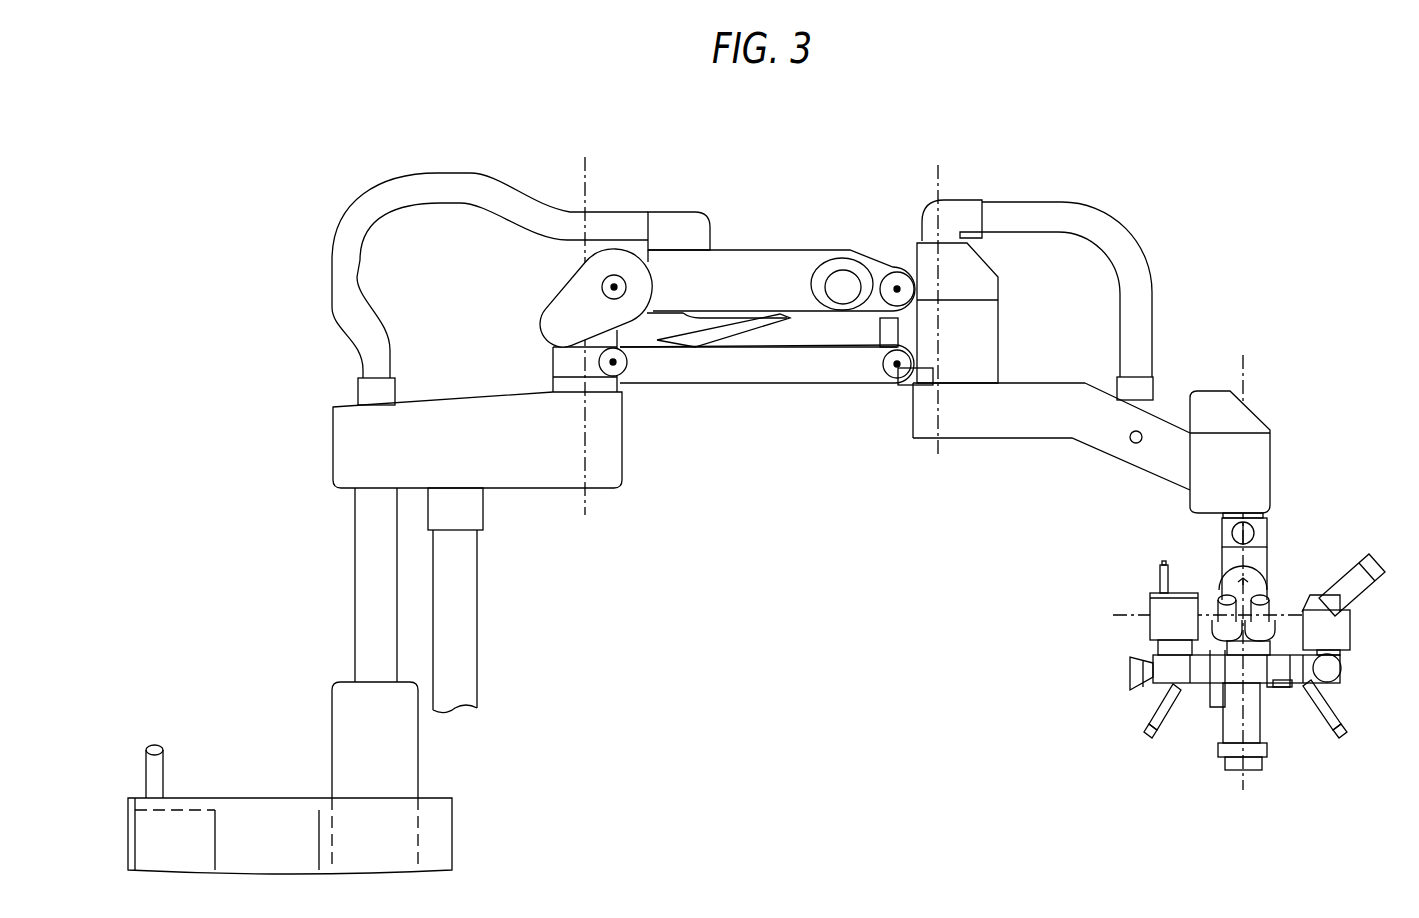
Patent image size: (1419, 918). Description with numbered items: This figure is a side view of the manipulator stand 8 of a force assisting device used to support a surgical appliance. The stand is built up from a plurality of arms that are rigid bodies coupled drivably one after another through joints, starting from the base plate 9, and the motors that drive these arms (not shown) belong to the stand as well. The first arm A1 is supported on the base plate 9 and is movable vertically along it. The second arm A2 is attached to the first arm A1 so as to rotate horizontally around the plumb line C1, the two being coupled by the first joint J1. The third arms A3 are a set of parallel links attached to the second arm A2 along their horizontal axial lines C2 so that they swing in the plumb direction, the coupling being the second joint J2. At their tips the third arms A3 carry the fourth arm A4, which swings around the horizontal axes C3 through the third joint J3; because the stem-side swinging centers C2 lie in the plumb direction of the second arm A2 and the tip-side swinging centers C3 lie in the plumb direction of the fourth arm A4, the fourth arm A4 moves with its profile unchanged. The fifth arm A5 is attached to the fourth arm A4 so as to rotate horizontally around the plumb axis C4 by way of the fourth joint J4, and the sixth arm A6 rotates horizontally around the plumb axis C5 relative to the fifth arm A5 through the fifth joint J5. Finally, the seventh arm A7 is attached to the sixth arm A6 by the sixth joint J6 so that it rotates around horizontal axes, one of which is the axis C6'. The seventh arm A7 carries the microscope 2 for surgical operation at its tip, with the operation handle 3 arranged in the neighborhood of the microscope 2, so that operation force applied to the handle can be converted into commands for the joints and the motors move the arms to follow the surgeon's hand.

The manipulator stand 8 is at (737, 614).
The base plate 9 is at (437, 821).
The microscope 2 is at (1262, 725).
The operation handle 3 is at (1332, 700).
The first arm A1 is at (527, 490).
The second arm A2 is at (560, 366).
The third arms A3 is at (770, 357).
The fourth arm A4 is at (985, 348).
The fifth arm A5 is at (1032, 423).
The sixth arm A6 is at (1260, 557).
The seventh arm A7 is at (1280, 640).
The first joint J1 is at (613, 468).
The second joint J2 is at (620, 255).
The third joint J3 is at (895, 283).
The fourth joint J4 is at (965, 400).
The fifth joint J5 is at (1262, 475).
The sixth joint J6 is at (1220, 583).
The plumb line C1 is at (580, 176).
The horizontal axial lines C2 is at (614, 297).
The horizontal axes C3 is at (897, 294).
The plumb axis C4 is at (938, 178).
The plumb axis C5 is at (1243, 372).
The horizontal axis C6' is at (1184, 608).